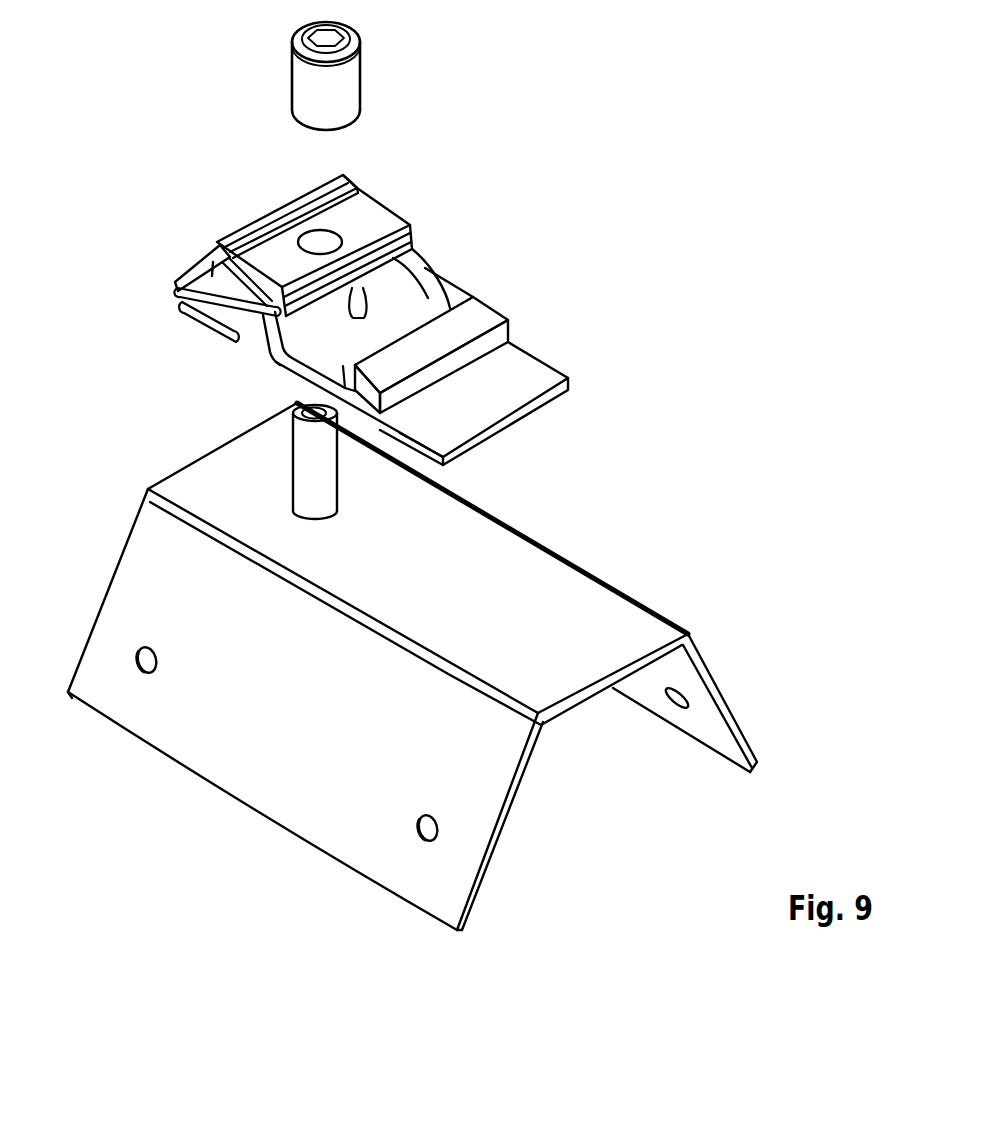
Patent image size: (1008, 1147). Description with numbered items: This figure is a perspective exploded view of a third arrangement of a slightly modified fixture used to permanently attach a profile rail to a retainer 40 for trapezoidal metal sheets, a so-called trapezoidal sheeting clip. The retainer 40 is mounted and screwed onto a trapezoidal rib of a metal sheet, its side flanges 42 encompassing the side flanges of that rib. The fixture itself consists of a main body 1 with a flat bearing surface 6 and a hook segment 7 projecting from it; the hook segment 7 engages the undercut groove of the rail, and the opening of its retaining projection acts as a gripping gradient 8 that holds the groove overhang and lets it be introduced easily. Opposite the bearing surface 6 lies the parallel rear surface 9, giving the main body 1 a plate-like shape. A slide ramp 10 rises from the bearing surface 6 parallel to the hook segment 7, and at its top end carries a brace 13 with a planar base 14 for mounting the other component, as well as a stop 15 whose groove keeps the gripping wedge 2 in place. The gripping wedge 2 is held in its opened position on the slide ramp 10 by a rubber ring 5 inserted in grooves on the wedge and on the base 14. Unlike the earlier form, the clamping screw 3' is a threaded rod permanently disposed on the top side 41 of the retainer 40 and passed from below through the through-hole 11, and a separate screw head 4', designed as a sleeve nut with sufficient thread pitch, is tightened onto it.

The main body 1 is at (507, 427).
The gripping wedge 2 is at (373, 213).
The clamping screw 3' is at (350, 500).
The screw head 4' is at (384, 76).
The rubber ring 5 is at (177, 300).
The bearing surface 6 is at (418, 306).
The hook segment 7 is at (462, 322).
The gripping gradient 8 is at (333, 370).
The rear surface 9 is at (297, 383).
The slide ramp 10 is at (388, 292).
The through-hole 11 is at (333, 232).
The brace 13 is at (218, 262).
The base 14 is at (210, 322).
The stop 15 is at (287, 210).
The retainer 40 is at (750, 634).
The top side 41 is at (560, 640).
The side flanges 42 is at (722, 702).